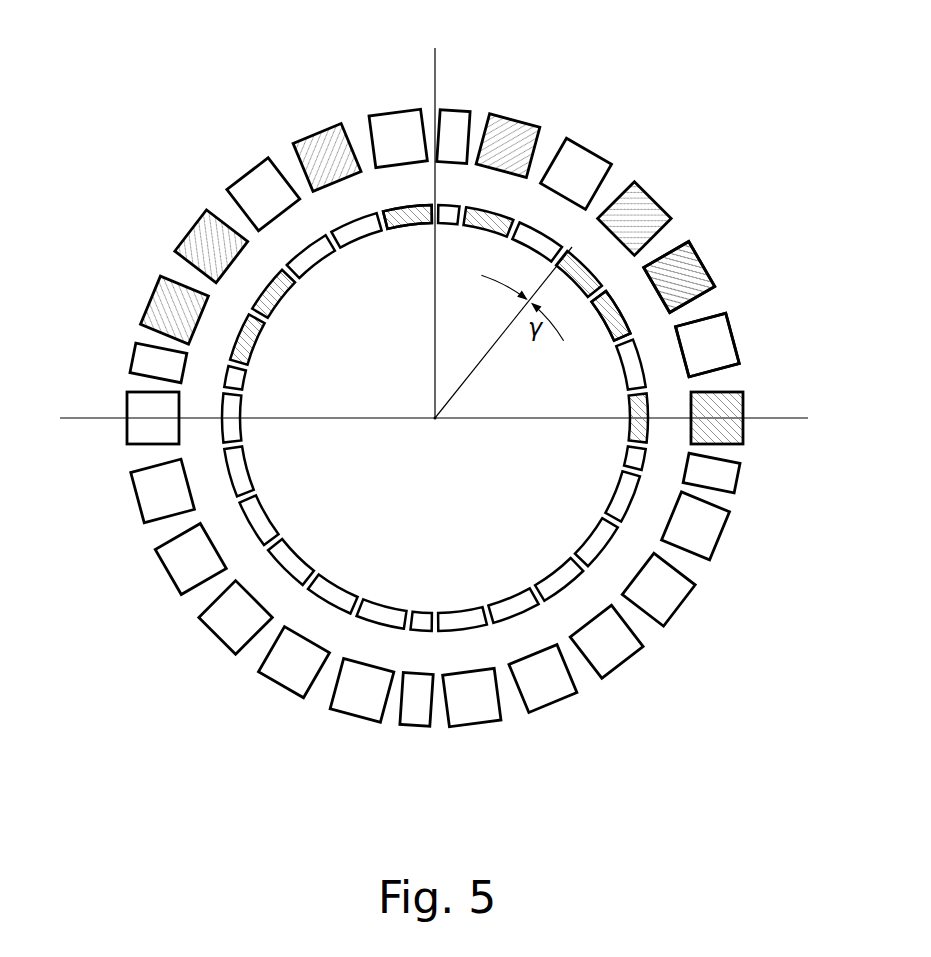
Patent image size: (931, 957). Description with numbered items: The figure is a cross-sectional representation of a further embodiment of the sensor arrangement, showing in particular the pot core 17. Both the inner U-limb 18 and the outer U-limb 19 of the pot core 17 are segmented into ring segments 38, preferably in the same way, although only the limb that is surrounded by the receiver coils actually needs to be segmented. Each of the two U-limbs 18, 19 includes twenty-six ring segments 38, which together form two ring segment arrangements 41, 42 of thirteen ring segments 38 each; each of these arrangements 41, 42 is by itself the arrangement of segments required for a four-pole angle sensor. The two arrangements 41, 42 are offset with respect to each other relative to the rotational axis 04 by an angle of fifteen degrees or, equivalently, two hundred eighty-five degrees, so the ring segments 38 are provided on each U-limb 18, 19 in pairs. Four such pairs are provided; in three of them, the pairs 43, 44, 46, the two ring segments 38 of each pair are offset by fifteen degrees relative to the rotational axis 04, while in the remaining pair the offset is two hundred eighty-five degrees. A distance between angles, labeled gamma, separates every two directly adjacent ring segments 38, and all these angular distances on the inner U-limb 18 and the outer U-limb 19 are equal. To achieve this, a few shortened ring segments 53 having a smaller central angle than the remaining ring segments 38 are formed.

The ring segments 38 is at (97, 313).
The ring segment arrangement 41 is at (390, 220).
The ring segment arrangement 42 is at (333, 230).
The pair of ring segments 43 is at (580, 292).
The pair of ring segments 44 is at (415, 223).
The pair of ring segments 46 is at (282, 300).
The inner U-limb 18 is at (255, 338).
The pot core 17 is at (238, 612).
The shortened ring segments 53 is at (630, 463).
The outer U-limb 19 is at (720, 343).
The rotational axis 04 is at (436, 420).